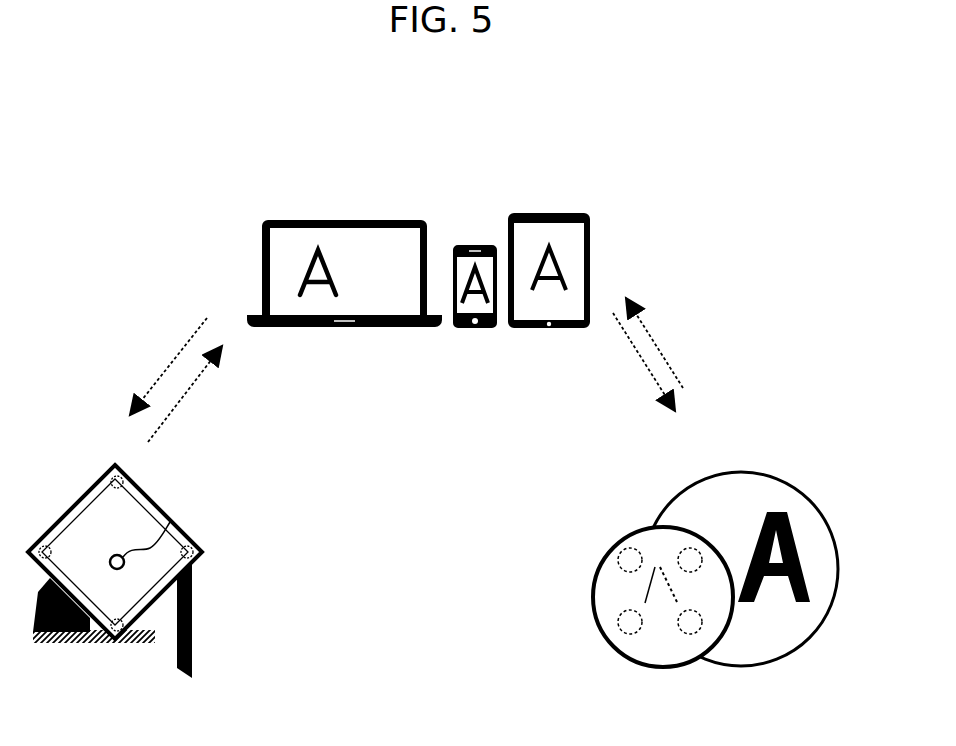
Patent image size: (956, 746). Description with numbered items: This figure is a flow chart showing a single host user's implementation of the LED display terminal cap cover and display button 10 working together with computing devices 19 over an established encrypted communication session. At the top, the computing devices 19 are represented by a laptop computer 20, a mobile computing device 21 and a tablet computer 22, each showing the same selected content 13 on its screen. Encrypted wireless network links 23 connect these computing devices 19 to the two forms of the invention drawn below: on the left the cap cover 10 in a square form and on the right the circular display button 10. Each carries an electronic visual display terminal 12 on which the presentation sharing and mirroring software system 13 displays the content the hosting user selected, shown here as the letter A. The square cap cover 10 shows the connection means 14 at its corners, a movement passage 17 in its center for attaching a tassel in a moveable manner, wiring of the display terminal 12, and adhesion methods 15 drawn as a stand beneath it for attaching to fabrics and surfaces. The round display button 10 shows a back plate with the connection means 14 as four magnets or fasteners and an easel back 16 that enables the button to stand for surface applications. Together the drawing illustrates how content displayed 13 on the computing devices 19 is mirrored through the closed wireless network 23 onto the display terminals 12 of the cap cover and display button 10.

The cap cover and display button 10 is at (93, 486).
The electronic visual display terminal 12 is at (170, 540).
The presentation sharing and mirroring software system 13 is at (334, 276).
The connection means 14 is at (127, 482).
The adhesion methods 15 is at (154, 613).
The easel back 16 is at (668, 599).
The movement passage 17 is at (110, 558).
The computing devices 19 is at (433, 113).
The laptop computer 20 is at (285, 216).
The mobile computing device 21 is at (472, 242).
The tablet computer 22 is at (552, 210).
The encrypted wireless network 23 is at (158, 335).